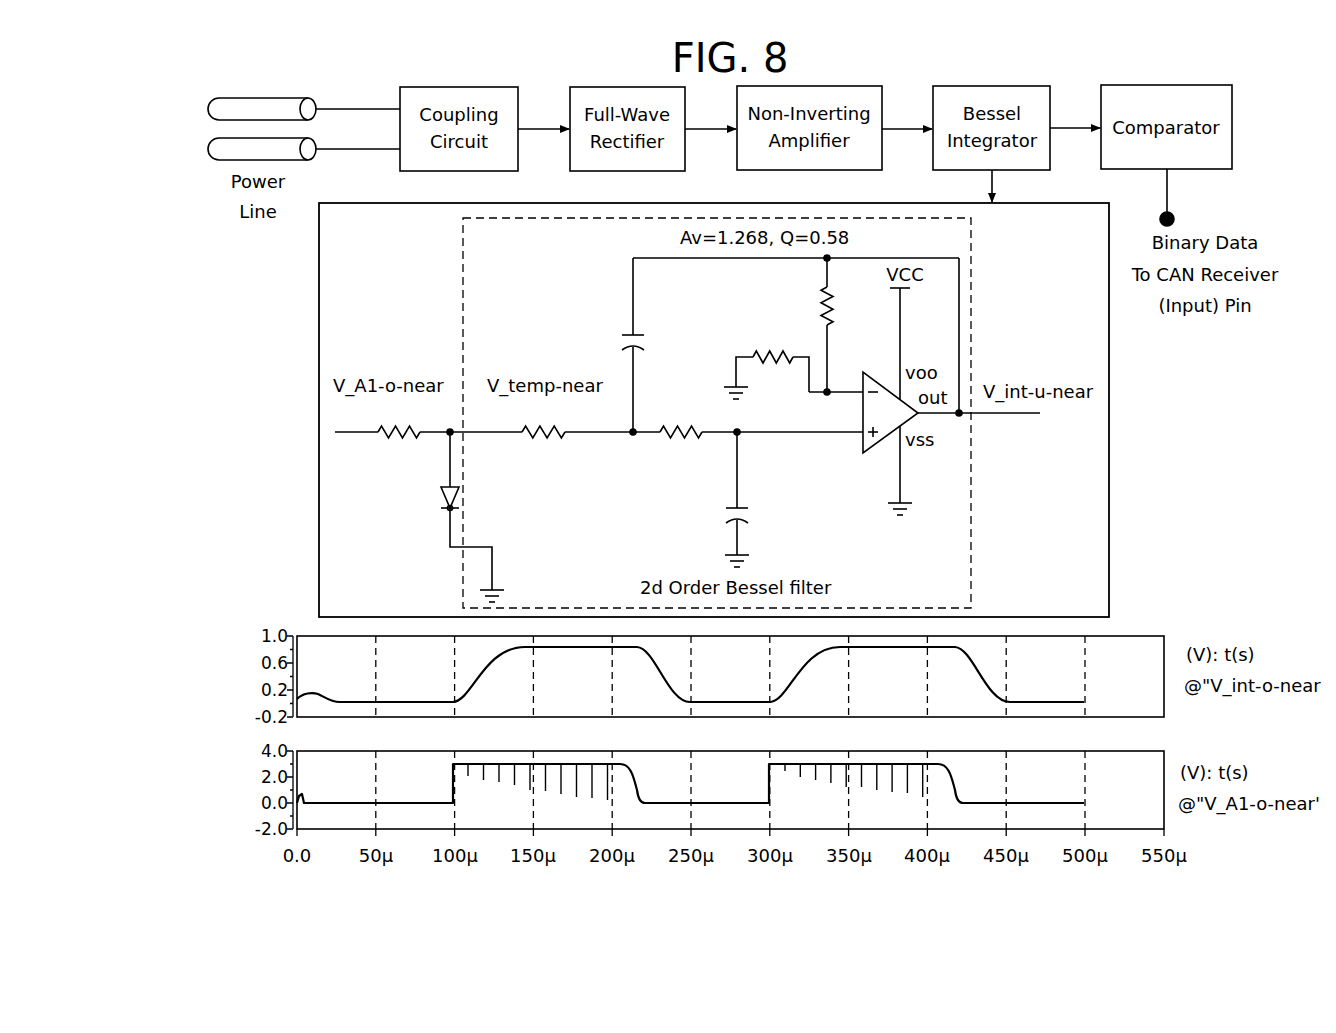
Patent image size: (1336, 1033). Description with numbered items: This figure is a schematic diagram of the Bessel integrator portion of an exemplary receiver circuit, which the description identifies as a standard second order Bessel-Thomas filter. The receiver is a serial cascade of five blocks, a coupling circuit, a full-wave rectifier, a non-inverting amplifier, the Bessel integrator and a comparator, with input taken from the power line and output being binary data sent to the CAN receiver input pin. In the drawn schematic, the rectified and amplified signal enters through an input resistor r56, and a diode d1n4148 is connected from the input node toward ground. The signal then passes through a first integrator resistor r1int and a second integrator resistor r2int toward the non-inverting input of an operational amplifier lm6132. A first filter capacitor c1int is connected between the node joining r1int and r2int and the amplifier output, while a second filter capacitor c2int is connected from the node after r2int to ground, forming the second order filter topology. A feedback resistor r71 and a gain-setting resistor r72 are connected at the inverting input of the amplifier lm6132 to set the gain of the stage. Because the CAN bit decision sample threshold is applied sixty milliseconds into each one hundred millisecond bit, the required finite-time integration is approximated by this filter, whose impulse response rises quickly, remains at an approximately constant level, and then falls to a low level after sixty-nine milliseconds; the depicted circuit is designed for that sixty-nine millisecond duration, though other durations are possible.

The input resistor 220 ohm r56 is at (399, 432).
The first integrator resistor 4.7k r1int is at (543, 432).
The second integrator resistor 4.7k r2int is at (681, 432).
The clamping diode d1n4148 is at (424, 517).
The first filter capacitor 1800p c1int is at (642, 345).
The second filter capacitor 1800p c2int is at (731, 499).
The feedback resistor 2.68k r71 is at (817, 325).
The gain resistor 10k r72 is at (766, 360).
The operational amplifier lm6132 is at (871, 401).